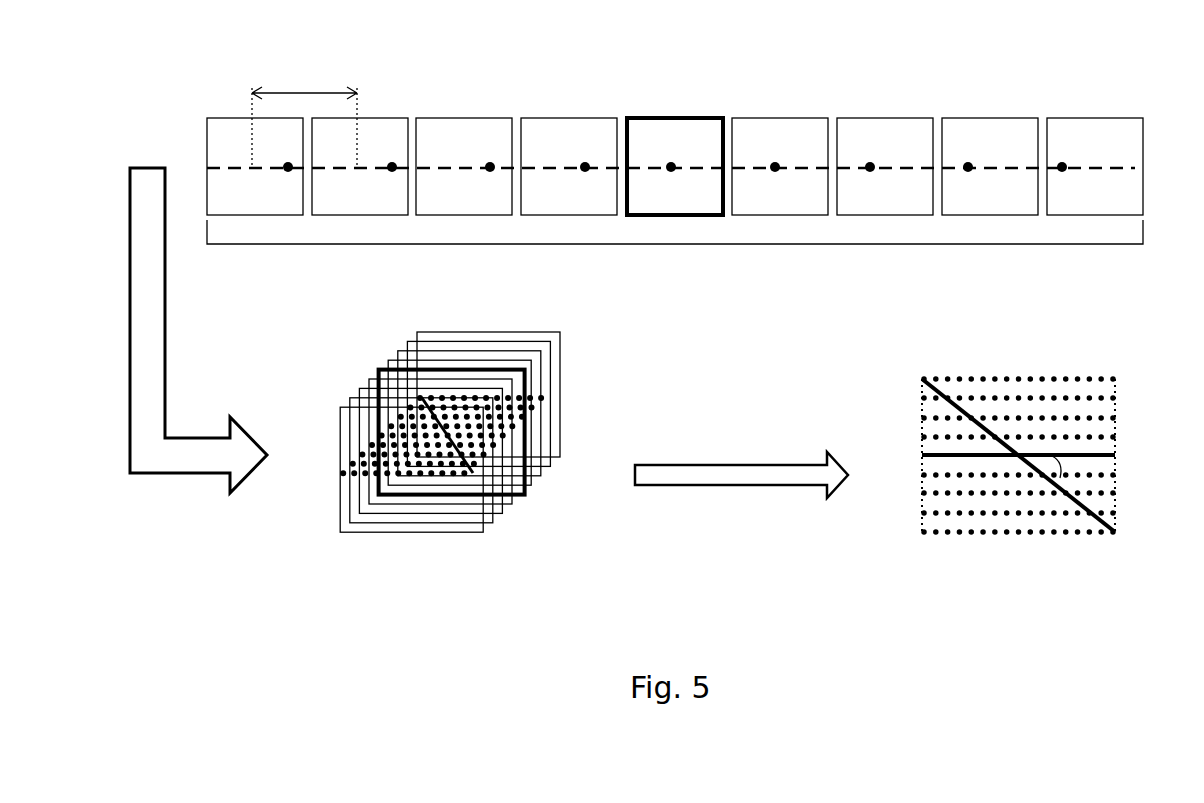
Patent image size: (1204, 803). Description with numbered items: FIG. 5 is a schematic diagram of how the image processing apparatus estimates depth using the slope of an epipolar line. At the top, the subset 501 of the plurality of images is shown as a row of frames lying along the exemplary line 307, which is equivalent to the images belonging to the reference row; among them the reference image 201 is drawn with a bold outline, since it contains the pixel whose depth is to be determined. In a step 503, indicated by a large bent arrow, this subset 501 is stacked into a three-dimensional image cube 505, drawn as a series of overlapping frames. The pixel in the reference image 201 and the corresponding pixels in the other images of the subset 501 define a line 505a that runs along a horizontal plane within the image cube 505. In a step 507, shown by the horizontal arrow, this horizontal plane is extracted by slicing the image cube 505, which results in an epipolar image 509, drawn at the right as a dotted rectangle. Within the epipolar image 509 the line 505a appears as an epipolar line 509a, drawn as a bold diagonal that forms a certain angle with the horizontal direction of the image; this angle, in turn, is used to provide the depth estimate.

The reference image 201 is at (673, 118).
The line 307 is at (794, 168).
The subset of the plurality of images 501 is at (675, 169).
The stacking step 503 is at (198, 330).
The 3D image cube 505 is at (436, 463).
The line 505a is at (447, 437).
The slicing step 507 is at (741, 465).
The epipolar image 509 is at (1061, 485).
The epipolar line 509a is at (990, 433).